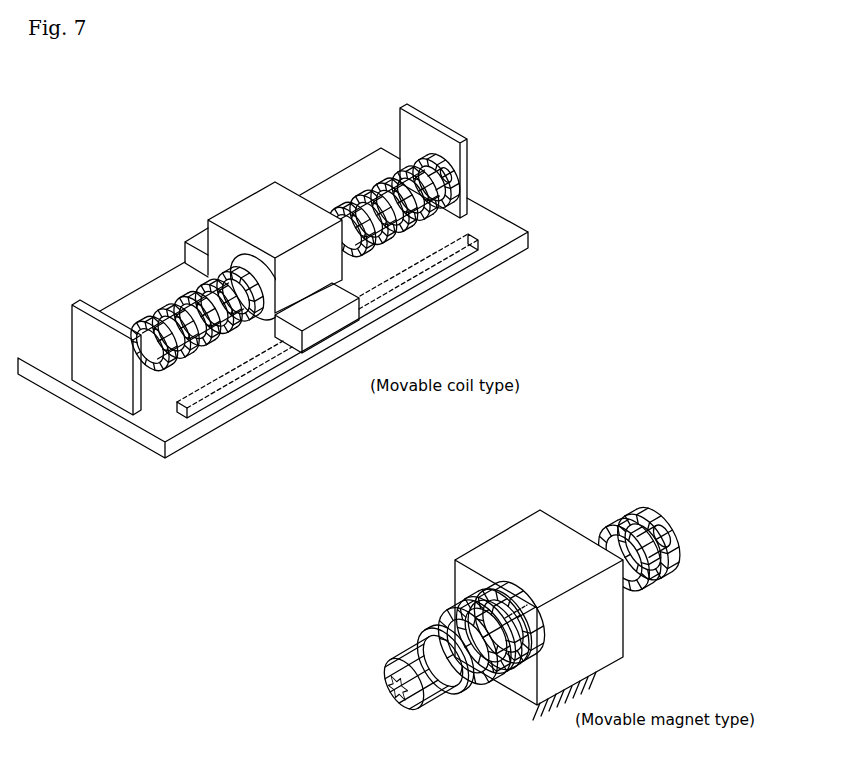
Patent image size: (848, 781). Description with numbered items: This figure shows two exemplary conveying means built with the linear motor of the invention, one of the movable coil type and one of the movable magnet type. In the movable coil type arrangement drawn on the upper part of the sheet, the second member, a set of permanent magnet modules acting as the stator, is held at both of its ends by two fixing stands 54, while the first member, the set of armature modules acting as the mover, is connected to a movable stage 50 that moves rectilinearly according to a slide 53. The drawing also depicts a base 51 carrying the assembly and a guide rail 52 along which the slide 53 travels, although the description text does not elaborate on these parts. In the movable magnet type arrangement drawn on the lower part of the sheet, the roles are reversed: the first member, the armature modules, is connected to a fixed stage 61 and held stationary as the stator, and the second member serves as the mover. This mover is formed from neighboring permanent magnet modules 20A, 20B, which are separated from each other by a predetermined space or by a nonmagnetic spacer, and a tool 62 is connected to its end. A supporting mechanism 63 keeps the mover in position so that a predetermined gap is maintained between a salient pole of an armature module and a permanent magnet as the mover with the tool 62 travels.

The movable stage 50 is at (257, 216).
The Base 51 is at (493, 222).
The Guide rail 52 is at (455, 245).
The slide 53 is at (328, 323).
The fixing stand 54 is at (465, 142).
The fixed stage 61 is at (523, 533).
The tool 62 is at (392, 688).
The supporting mechanism 63 is at (527, 622).
The permanent magnet module 20A is at (477, 610).
The permanent magnet module 20B is at (485, 617).